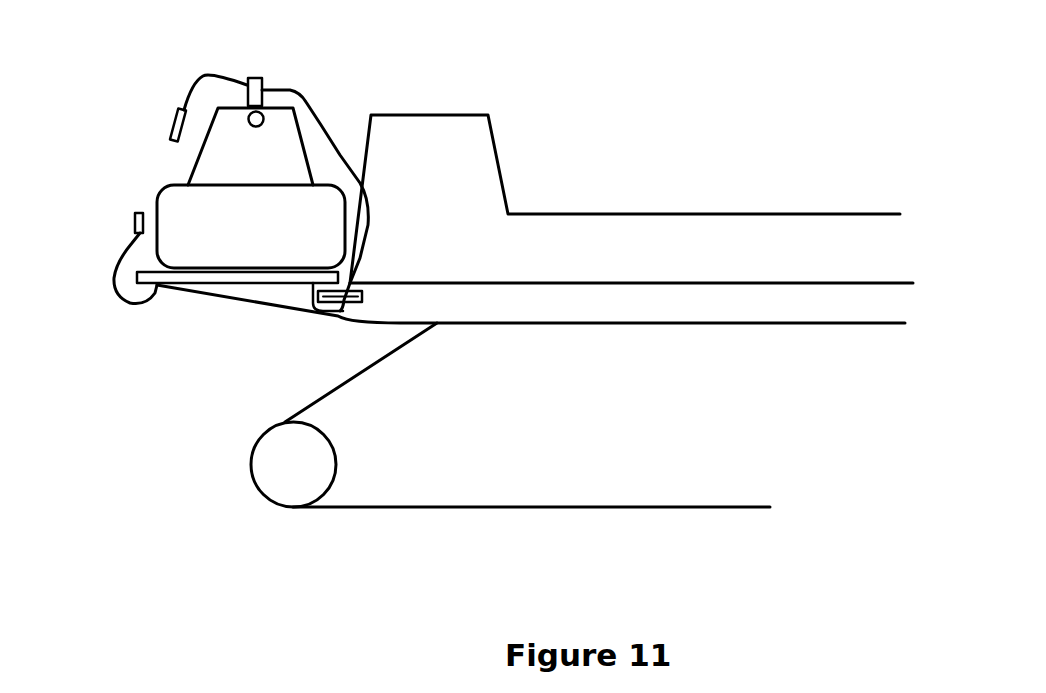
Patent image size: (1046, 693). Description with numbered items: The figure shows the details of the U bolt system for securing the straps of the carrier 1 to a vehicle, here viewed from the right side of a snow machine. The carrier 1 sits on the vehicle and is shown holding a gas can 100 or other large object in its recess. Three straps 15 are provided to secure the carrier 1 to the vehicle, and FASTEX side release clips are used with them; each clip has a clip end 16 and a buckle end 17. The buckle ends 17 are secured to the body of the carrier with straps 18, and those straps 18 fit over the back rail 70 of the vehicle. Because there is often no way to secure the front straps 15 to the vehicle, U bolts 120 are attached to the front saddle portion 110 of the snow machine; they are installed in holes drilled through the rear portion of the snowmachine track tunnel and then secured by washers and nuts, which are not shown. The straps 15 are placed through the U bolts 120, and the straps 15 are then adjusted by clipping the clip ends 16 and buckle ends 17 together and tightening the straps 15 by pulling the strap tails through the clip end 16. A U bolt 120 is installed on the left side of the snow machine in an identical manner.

The carrier 1 is at (250, 226).
The straps 15 is at (300, 87).
The clip end 16 is at (168, 128).
The buckle end 17 is at (132, 226).
The straps 18 is at (115, 290).
The back rail 70 is at (210, 287).
The gas can 100 is at (198, 155).
The front saddle portion 110 is at (570, 211).
The U bolts 120 is at (364, 297).